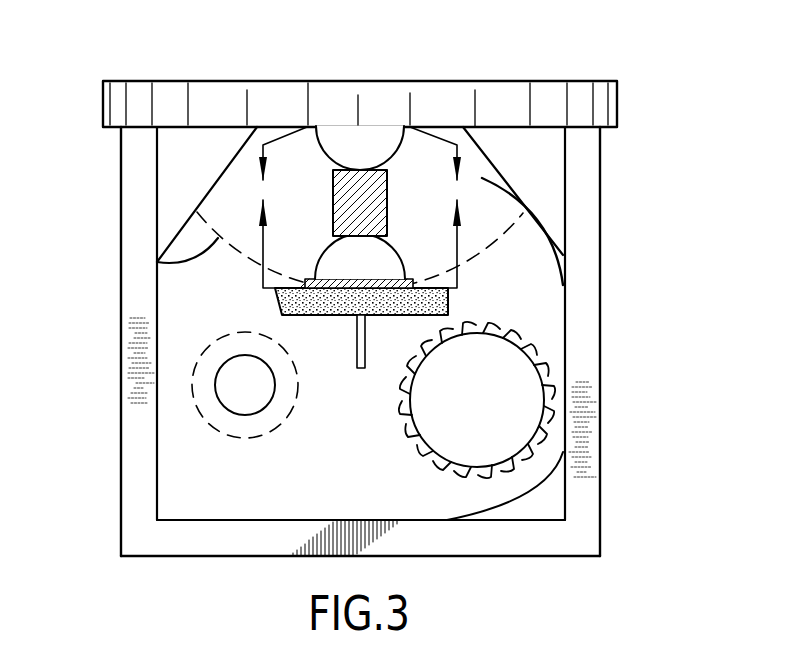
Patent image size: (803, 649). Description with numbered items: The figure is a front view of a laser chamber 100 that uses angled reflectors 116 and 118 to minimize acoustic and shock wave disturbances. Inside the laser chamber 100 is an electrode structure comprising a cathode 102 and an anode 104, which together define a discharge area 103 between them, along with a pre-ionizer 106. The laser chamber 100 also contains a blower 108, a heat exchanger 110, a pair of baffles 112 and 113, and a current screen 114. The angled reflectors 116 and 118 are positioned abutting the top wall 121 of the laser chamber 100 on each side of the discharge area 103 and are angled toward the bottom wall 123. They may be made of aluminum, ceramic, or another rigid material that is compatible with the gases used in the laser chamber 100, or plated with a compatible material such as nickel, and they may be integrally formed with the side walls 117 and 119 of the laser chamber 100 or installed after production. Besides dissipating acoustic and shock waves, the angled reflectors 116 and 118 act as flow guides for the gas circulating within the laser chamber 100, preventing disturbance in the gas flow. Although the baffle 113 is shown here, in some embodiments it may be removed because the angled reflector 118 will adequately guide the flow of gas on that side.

The laser chamber 100 is at (660, 86).
The cathode 102 is at (382, 157).
The discharge area 103 is at (366, 203).
The anode 104 is at (382, 272).
The pre-ionizer 106 is at (290, 128).
The blower 108 is at (458, 413).
The heat exchanger 110 is at (226, 397).
The baffle 112 is at (507, 507).
The baffle 113 is at (558, 262).
The current screen 114 is at (157, 261).
The angled reflector 116 is at (230, 165).
The wall 117 is at (157, 427).
The angled reflector 118 is at (502, 170).
The wall 119 is at (565, 348).
The top wall 121 is at (458, 110).
The bottom wall 123 is at (398, 543).